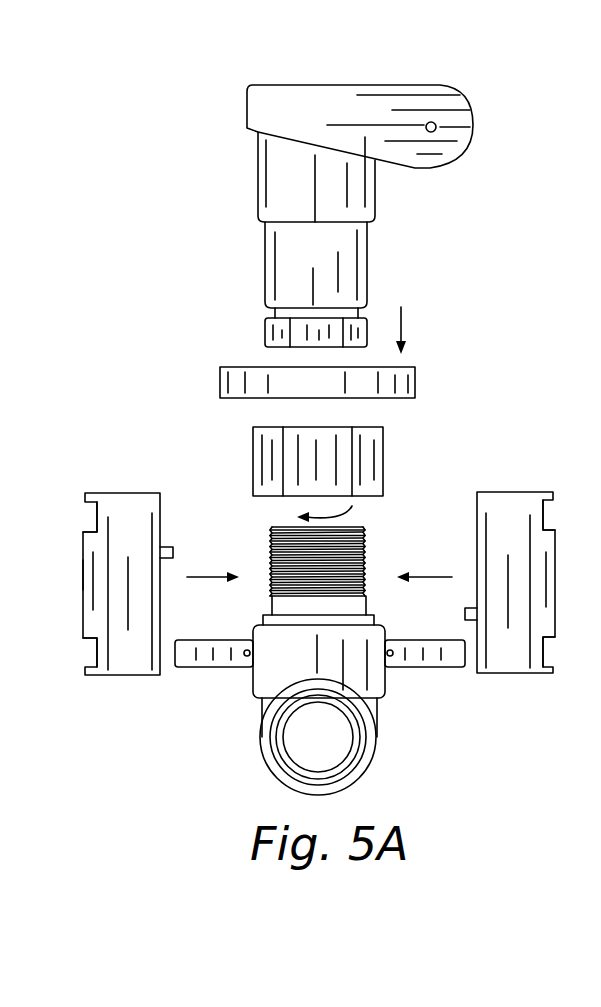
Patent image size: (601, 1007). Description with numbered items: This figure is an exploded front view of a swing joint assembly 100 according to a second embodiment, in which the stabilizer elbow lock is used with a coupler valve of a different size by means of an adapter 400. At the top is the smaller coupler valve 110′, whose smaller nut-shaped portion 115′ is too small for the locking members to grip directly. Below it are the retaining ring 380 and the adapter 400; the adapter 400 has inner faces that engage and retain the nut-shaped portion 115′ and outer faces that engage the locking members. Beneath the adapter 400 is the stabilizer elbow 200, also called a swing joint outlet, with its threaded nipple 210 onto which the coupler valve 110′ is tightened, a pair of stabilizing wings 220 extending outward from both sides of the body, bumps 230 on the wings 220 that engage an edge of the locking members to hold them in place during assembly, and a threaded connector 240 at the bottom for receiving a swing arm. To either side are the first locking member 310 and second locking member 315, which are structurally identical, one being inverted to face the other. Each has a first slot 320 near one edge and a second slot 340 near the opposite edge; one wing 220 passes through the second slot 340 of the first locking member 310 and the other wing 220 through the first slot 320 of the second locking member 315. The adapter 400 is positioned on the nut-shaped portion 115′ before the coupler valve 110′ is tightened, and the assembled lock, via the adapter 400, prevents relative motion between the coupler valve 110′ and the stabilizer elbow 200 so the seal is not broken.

The swing joint assembly 100 is at (146, 135).
The smaller coupler valve 110′ is at (262, 182).
The nut-shaped portion 115′ is at (317, 328).
The stabilizer elbow 200 is at (255, 697).
The threaded nipple 210 is at (273, 563).
The stabilizing wing 220 is at (208, 668).
The bumps 230 is at (392, 652).
The threaded connector 240 is at (362, 743).
The first locking member 310 is at (477, 567).
The second locking member 315 is at (83, 573).
The first slot 320 is at (92, 650).
The second slot 340 is at (97, 517).
The retaining ring 380 is at (218, 383).
The adapter 400 is at (383, 460).